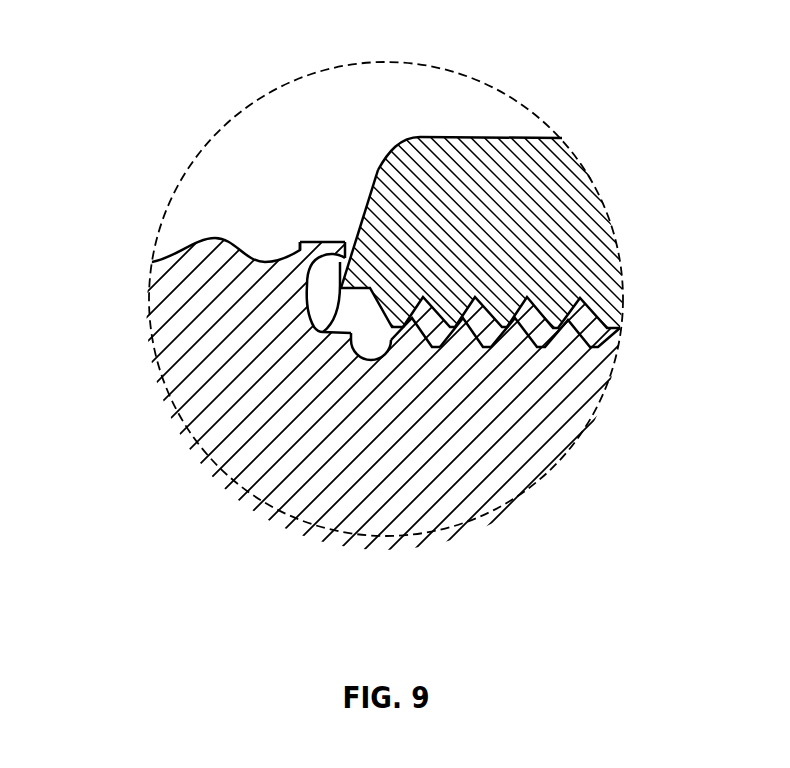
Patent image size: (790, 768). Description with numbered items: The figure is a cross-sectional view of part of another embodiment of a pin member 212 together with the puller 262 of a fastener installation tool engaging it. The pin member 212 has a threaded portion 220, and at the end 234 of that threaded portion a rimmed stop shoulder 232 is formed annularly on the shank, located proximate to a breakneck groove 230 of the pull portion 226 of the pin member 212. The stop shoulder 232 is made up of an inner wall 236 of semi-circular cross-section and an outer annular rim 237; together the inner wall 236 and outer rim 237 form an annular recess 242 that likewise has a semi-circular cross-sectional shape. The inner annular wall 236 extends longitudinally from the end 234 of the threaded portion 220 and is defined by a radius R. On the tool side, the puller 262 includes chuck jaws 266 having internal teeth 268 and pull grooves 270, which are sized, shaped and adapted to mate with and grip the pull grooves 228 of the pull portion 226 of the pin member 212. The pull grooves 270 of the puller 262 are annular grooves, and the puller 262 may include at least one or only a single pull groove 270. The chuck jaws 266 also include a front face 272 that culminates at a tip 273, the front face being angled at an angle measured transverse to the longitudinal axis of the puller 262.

The pin member 212 is at (236, 422).
The threaded portion 220 is at (172, 276).
The pull portion 226 is at (523, 433).
The pull grooves 228 is at (595, 340).
The breakneck groove 230 is at (371, 361).
The stop shoulder 232 is at (320, 242).
The end of the threaded portion 234 is at (303, 243).
The inner wall 236 is at (320, 254).
The outer annular rim 237 is at (330, 238).
The annular recess 242 is at (361, 306).
The puller 262 is at (542, 153).
The chuck jaws 266 is at (588, 262).
The internal teeth 268 is at (495, 300).
The pull grooves 270 is at (448, 303).
The front face 272 is at (383, 165).
The tip 273 is at (325, 331).
The radius R is at (294, 305).